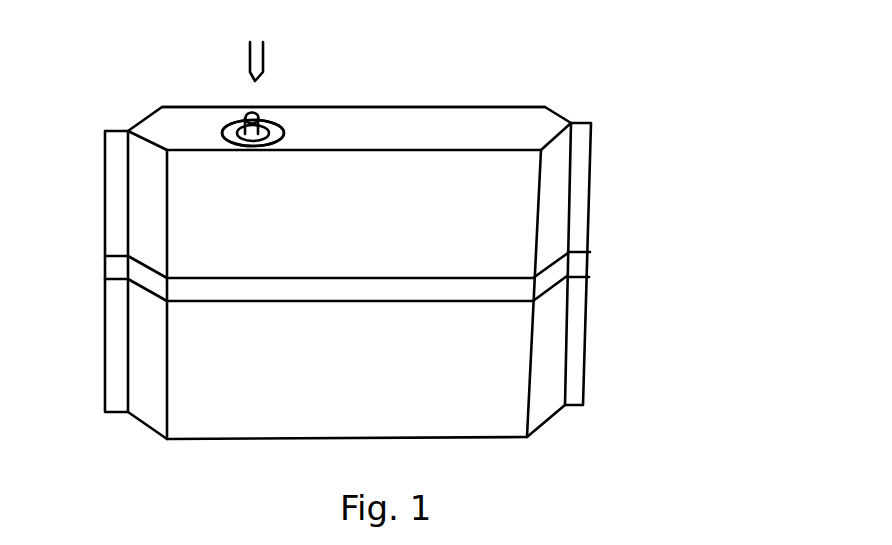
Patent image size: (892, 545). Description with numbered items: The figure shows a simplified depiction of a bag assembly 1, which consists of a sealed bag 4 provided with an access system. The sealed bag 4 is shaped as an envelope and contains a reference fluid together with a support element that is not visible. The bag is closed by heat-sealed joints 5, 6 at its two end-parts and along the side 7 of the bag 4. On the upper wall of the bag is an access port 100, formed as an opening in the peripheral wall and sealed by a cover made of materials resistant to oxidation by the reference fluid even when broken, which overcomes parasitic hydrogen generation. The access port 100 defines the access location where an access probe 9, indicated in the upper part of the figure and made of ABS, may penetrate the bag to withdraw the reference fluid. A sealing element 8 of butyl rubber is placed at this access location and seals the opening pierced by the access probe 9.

The bag assembly 1 is at (631, 197).
The sealed bag 4 is at (510, 118).
The heat-sealed joint 5 is at (113, 328).
The heat-sealed joint 6 is at (580, 332).
The side 7 is at (548, 280).
The sealing element 8 is at (260, 123).
The access probe 9 is at (247, 60).
The access port 100 is at (232, 133).